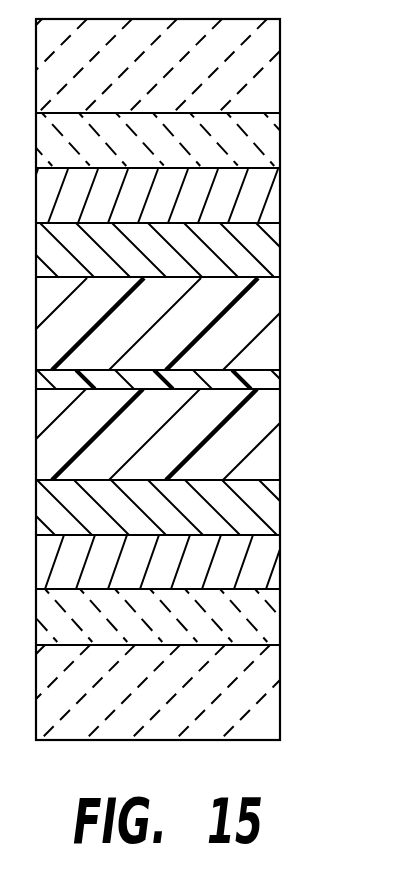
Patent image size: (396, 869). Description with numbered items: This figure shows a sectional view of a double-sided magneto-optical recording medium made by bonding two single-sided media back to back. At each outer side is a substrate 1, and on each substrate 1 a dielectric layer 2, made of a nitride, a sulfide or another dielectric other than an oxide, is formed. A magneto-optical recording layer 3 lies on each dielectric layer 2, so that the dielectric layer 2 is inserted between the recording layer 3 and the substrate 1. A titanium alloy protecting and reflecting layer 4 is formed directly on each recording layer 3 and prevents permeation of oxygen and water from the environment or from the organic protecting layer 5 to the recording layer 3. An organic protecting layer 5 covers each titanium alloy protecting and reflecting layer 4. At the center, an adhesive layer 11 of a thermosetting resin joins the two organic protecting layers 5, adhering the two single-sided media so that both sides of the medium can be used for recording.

The substrate 1 is at (267, 62).
The dielectric layer 2 is at (272, 130).
The magneto-optical recording layer 3 is at (267, 193).
The titanium alloy protecting and reflecting layer 4 is at (272, 243).
The organic protecting layer 5 is at (253, 313).
The adhesive layer 11 is at (282, 378).